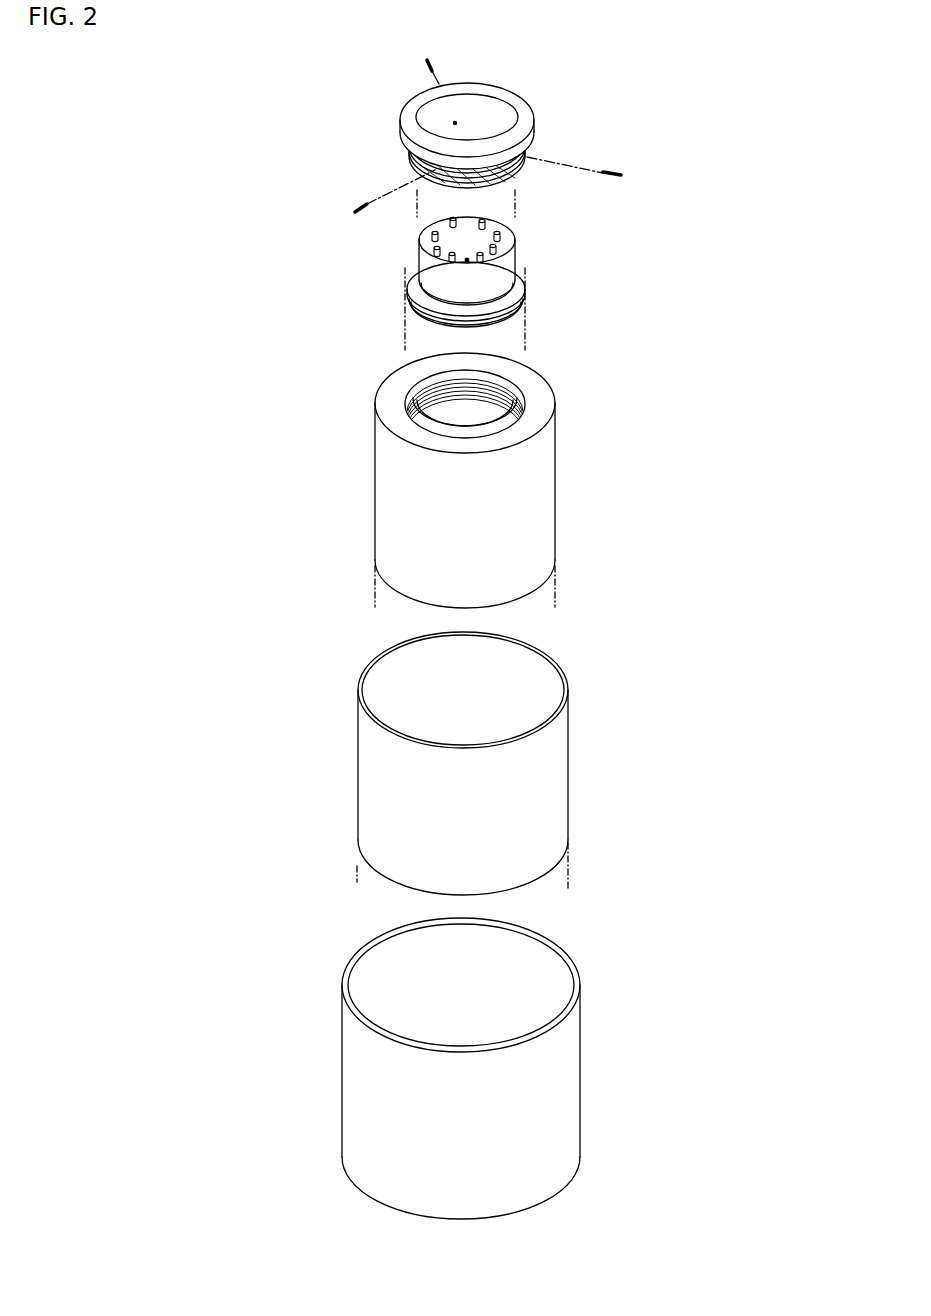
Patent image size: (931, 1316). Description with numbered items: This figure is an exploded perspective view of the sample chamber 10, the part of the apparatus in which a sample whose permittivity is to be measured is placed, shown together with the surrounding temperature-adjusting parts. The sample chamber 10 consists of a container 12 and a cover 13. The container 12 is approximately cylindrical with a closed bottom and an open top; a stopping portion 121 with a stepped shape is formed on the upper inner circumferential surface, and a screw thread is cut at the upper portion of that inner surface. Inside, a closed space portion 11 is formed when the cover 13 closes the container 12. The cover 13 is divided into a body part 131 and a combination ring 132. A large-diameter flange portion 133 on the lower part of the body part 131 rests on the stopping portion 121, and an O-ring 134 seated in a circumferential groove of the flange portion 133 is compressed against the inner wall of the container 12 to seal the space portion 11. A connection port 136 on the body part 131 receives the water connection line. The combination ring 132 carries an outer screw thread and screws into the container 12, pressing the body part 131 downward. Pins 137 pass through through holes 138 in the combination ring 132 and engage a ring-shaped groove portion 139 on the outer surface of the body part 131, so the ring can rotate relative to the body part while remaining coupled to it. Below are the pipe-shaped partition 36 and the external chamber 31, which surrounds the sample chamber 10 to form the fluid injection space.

The sample chamber 10 is at (724, 318).
The space portion 11 is at (485, 430).
The container 12 is at (530, 504).
The stopping portion 121 is at (408, 408).
The cover 13 is at (259, 172).
The body part 131 is at (430, 270).
The combination ring 132 is at (405, 146).
The flange portion 133 is at (523, 280).
The O-ring 134 is at (520, 303).
The connection port 136 is at (483, 214).
The pins 137 is at (426, 63).
The through holes 138 is at (455, 123).
The groove portion 139 is at (417, 287).
The partition 36 is at (560, 773).
The external chamber 31 is at (565, 1092).